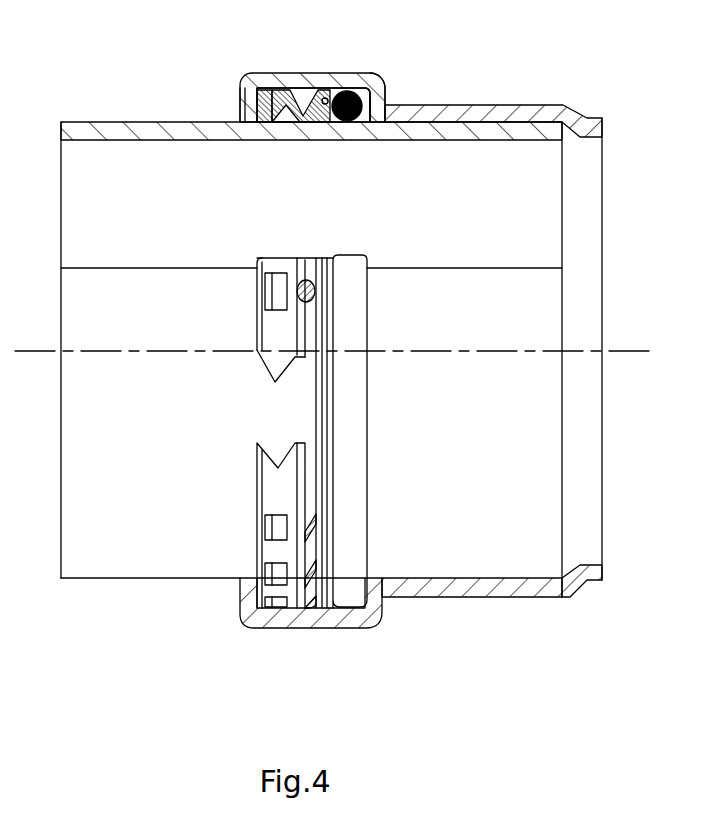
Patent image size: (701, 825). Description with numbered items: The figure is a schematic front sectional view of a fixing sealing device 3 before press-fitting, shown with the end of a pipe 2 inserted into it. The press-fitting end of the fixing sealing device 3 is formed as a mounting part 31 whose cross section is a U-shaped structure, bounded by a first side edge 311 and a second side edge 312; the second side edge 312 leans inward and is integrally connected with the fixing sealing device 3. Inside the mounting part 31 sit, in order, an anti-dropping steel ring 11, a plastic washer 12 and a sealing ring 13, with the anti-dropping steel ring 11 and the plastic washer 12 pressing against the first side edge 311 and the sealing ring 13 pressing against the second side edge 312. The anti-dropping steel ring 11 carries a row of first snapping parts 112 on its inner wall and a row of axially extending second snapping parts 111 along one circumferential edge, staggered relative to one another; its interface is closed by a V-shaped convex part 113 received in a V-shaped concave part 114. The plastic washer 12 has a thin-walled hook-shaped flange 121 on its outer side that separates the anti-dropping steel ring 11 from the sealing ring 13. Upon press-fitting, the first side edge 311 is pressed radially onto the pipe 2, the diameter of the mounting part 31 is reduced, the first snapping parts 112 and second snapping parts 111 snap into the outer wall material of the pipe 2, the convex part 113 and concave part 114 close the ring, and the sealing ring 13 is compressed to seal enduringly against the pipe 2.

The pipe 2 is at (150, 120).
The fixing sealing device 3 is at (453, 117).
The mounting part 31 is at (330, 72).
The first side edge 311 is at (237, 102).
The second side edge 312 is at (377, 92).
The anti-dropping steel ring 11 is at (250, 327).
The second snapping part 111 is at (312, 92).
The first snapping part 112 is at (268, 105).
The convex part 113 is at (272, 377).
The concave part 114 is at (270, 462).
The plastic washer 12 is at (340, 118).
The hook-shaped flange 121 is at (317, 87).
The sealing ring 13 is at (338, 90).